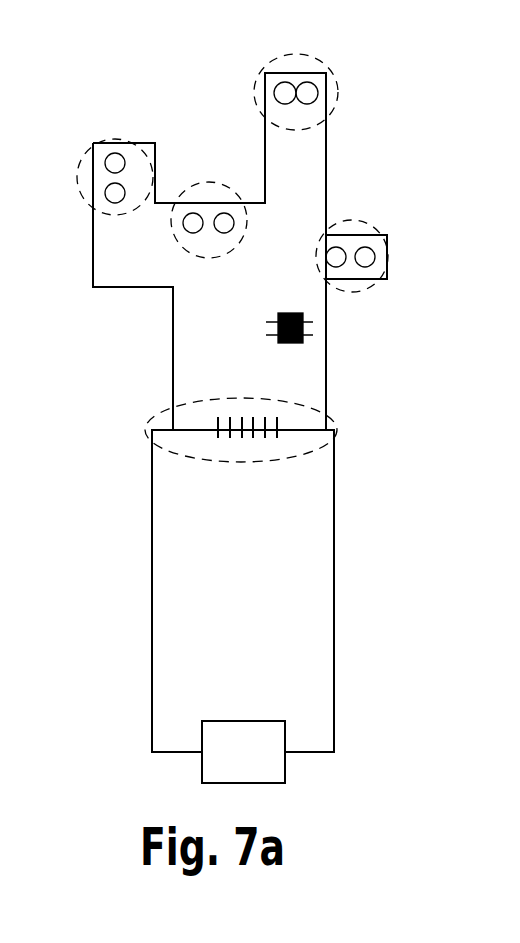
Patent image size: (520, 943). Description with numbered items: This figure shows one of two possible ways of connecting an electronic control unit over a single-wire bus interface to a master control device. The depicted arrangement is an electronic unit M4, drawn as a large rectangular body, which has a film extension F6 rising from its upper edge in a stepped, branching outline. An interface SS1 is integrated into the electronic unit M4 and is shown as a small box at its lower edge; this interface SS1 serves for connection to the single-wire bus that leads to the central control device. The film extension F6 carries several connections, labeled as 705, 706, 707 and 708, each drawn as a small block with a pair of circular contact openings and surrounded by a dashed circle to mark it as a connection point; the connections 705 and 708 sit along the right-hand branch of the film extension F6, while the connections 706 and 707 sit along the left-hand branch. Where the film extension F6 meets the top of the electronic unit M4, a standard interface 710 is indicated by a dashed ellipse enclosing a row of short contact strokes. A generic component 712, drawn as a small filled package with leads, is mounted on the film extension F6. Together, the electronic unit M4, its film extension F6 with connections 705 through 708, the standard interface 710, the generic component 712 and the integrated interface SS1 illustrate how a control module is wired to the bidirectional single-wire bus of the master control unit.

The connection of film extension 705 is at (333, 78).
The connection of film extension 706 is at (110, 140).
The connection of film extension 707 is at (204, 186).
The connection of film extension 708 is at (397, 244).
The standard interface 710 is at (340, 424).
The generic component 712 is at (303, 322).
The electronic unit M4 is at (243, 591).
The film extension F6 is at (230, 292).
The interface SS1 is at (265, 762).